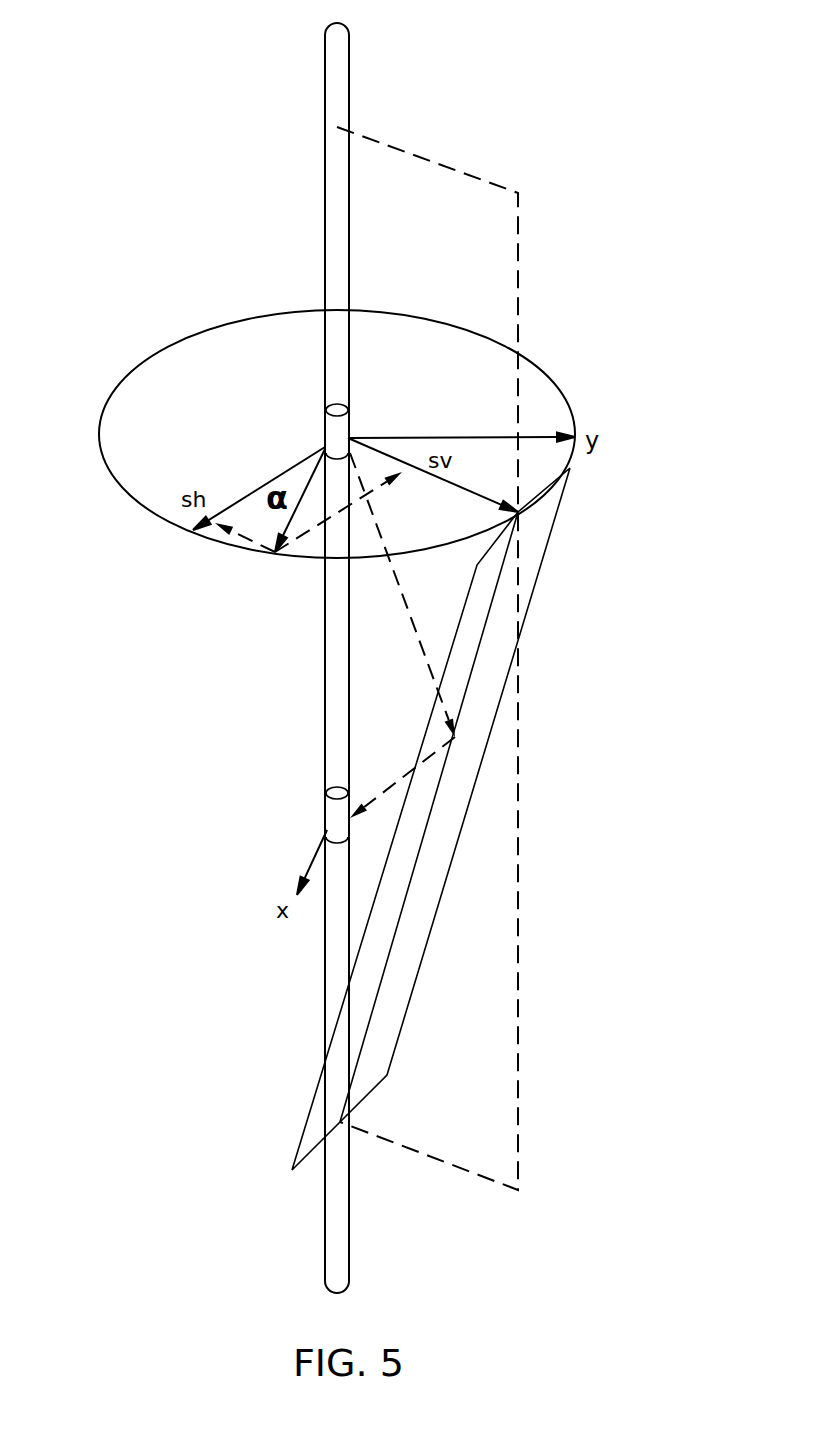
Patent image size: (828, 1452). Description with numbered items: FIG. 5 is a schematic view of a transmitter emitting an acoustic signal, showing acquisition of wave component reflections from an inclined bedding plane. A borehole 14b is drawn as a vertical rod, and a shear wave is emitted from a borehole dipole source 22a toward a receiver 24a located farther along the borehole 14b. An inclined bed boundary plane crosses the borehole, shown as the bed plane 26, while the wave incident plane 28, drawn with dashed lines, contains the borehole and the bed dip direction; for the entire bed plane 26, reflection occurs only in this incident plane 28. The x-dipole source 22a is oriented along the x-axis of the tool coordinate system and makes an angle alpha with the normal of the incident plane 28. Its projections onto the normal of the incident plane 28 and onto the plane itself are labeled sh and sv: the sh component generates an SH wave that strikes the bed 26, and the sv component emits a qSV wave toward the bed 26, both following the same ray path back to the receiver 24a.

The rod 14b is at (343, 75).
The first sensor 22a is at (346, 418).
The second sensor 24a is at (335, 793).
The bed plane 26 is at (553, 524).
The wave incident plane 28 is at (520, 875).